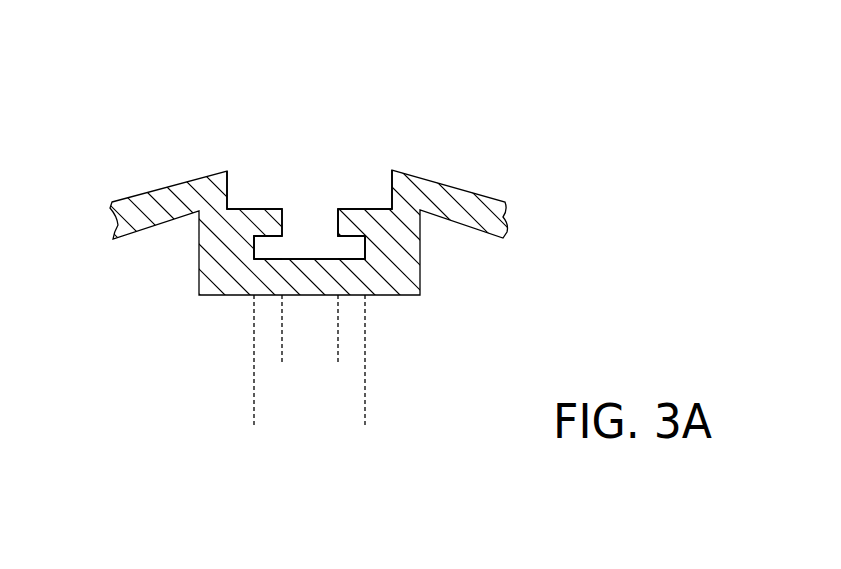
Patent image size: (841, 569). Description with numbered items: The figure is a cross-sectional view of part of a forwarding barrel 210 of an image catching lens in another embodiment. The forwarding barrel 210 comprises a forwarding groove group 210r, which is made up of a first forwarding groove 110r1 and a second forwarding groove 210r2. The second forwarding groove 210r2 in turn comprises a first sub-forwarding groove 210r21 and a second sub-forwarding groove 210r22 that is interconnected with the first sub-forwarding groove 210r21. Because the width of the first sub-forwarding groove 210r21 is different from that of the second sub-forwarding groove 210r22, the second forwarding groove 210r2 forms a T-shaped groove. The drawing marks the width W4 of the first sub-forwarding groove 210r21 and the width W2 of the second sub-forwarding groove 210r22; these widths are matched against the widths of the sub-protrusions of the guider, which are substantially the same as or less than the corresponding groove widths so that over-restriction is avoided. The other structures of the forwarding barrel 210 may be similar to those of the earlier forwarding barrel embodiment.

The forwarding barrel 210 is at (152, 165).
The forwarding groove group 210r is at (390, 72).
The first forwarding groove 110r1 is at (228, 210).
The second forwarding groove 210r2 is at (457, 121).
The second sub-forwarding groove 210r22 is at (256, 247).
The first sub-forwarding groove 210r21 is at (338, 223).
The width of the first sub-forwarding groove W4 is at (328, 362).
The width of the second sub-forwarding groove W2 is at (353, 432).